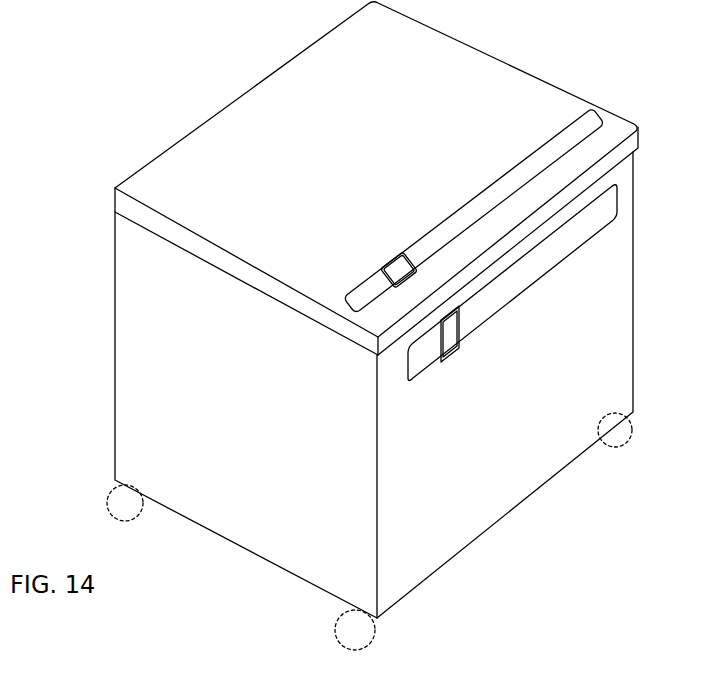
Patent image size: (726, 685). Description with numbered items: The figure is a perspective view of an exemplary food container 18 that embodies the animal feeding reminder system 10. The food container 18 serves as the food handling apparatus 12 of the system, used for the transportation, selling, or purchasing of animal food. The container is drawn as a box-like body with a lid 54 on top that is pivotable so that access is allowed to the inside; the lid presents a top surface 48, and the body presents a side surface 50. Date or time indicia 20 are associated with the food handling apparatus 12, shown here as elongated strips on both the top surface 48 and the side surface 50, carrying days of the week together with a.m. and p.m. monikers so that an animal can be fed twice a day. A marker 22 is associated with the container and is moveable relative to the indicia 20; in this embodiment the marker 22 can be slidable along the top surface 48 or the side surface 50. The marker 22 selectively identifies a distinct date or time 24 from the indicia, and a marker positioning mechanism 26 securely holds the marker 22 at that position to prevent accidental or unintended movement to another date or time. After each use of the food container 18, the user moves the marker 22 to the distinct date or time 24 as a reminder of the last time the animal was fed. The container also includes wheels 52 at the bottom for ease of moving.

The animal feeding reminder system 10 is at (359, 326).
The food handling apparatus 12 is at (359, 326).
The food container 18 is at (359, 326).
The date or time indicia 20 is at (592, 110).
The marker 22 is at (324, 388).
The distinct date or time 24 is at (386, 280).
The marker positioning mechanism 26 is at (381, 270).
The top surface 48 is at (235, 133).
The side surface 50 is at (245, 532).
The wheels 52 is at (105, 498).
The lid 54 is at (302, 90).